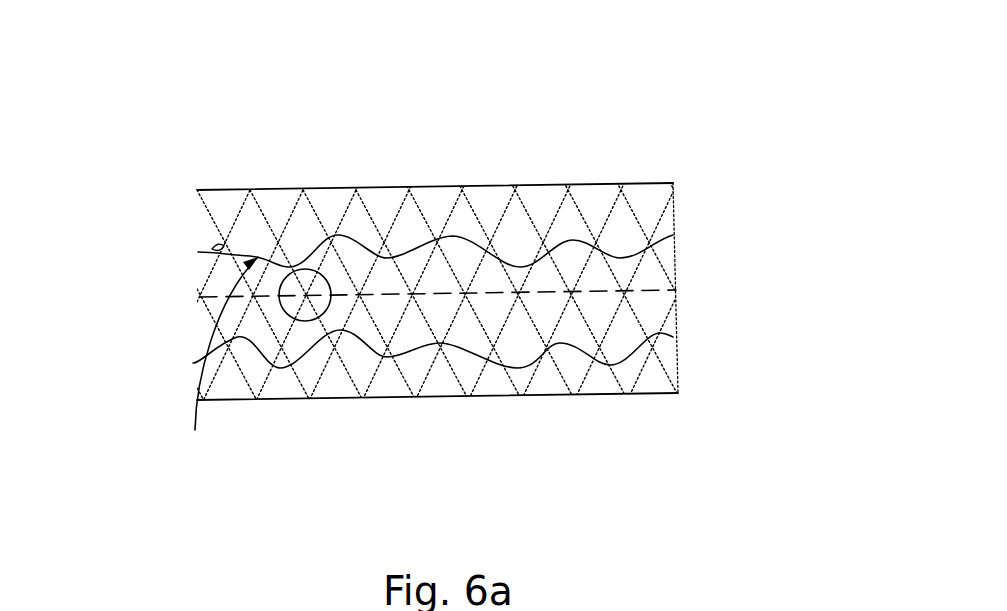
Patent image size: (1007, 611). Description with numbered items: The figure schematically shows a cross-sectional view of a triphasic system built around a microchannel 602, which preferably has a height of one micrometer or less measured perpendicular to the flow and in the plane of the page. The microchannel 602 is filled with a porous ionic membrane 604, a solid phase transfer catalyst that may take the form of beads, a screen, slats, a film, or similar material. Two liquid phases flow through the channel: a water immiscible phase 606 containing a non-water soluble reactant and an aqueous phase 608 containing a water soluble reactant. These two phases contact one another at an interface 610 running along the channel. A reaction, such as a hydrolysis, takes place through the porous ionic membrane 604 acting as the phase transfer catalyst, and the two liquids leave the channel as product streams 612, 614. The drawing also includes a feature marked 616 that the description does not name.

The microchannel 602 is at (655, 182).
The porous ionic membrane 604 is at (379, 376).
The water immiscible phase 606 is at (170, 252).
The aqueous phase 608 is at (121, 408).
The interface 610 is at (667, 300).
The product stream 612 is at (673, 235).
The product stream 614 is at (754, 393).
The sinuous fiber 616 is at (407, 252).